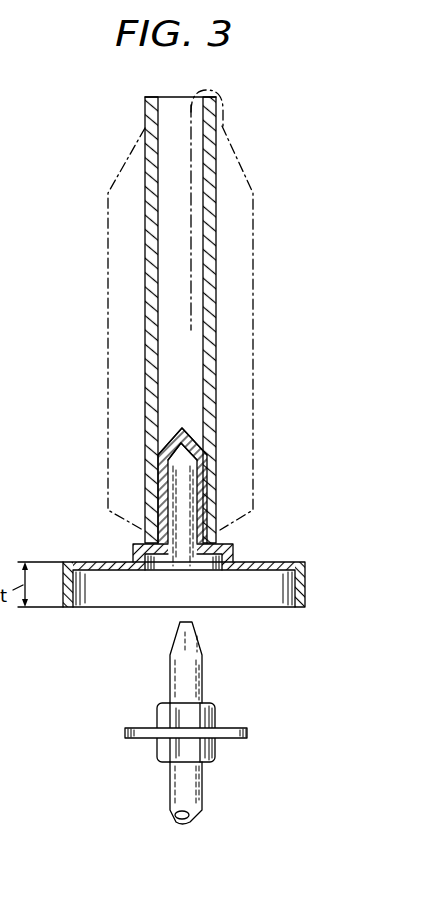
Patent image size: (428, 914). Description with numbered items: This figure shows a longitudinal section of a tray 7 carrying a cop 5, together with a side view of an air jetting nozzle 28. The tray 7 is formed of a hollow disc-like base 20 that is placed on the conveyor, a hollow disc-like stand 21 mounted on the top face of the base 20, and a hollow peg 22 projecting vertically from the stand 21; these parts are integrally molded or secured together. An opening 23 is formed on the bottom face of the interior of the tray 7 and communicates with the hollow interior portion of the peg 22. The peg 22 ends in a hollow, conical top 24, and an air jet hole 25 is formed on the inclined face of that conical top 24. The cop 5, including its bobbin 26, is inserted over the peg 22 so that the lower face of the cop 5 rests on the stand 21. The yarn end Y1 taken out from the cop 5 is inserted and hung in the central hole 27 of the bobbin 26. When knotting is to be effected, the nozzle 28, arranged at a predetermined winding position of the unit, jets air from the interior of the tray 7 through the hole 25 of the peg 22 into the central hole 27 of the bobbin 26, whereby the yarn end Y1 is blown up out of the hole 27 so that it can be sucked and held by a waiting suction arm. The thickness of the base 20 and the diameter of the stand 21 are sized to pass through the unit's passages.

The cop 5 is at (253, 245).
The tray 7 is at (270, 539).
The hollow disc-like base 20 is at (305, 593).
The hollow disc-like stand 21 is at (138, 545).
The hollow peg 22 is at (203, 500).
The opening 23 is at (155, 588).
The hollow conical top 24 is at (173, 442).
The air jet hole 25 is at (193, 443).
The bobbin 26 is at (208, 316).
The central hole 27 is at (170, 172).
The nozzle 28 is at (187, 687).
The yarn end Y1 is at (192, 202).